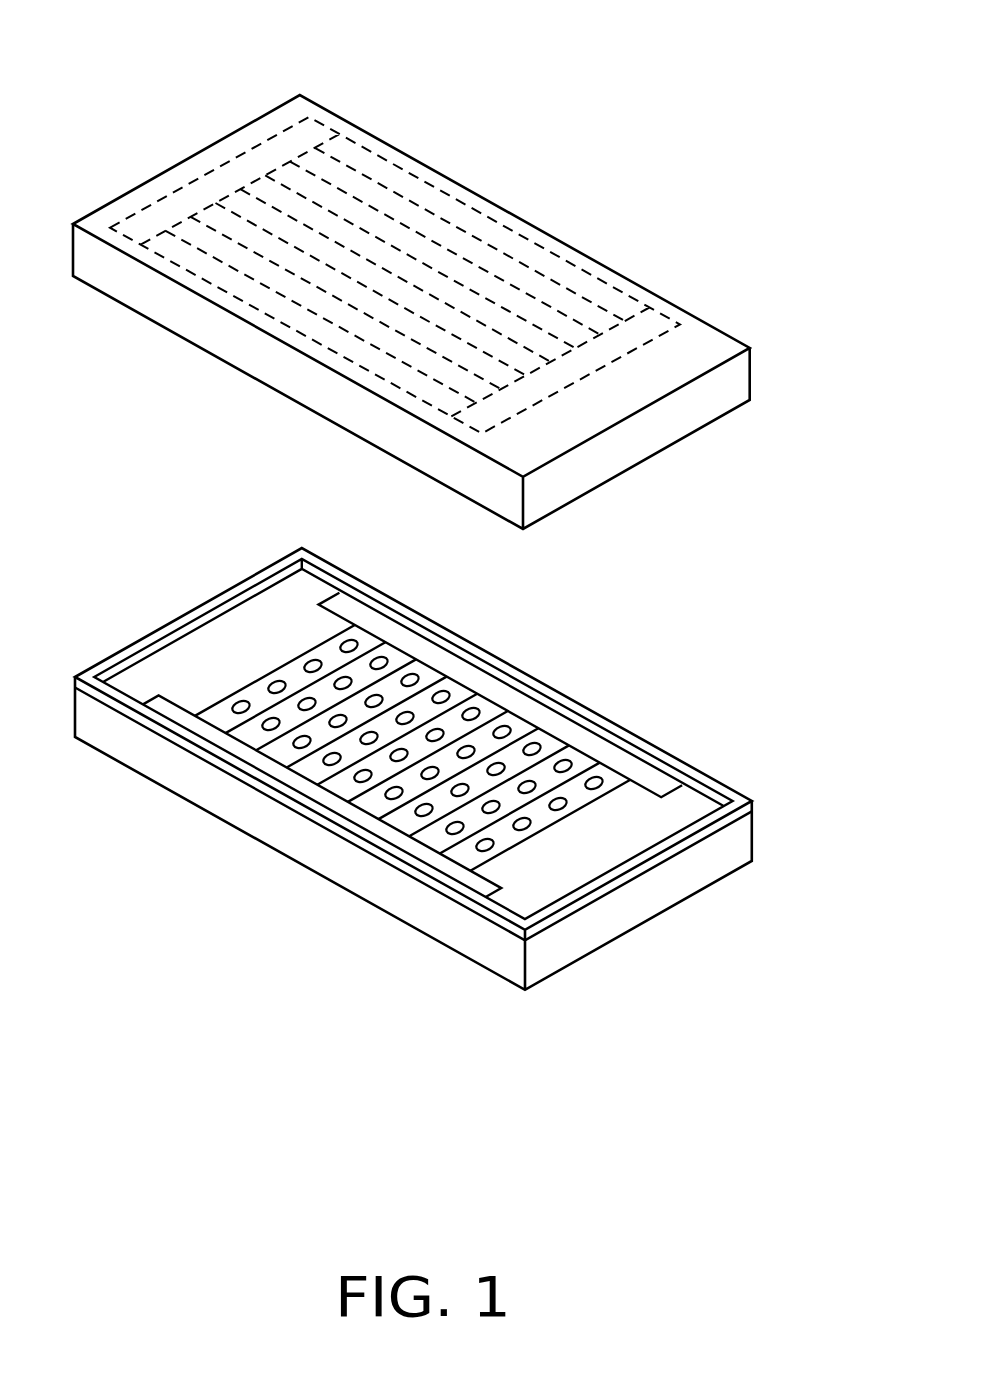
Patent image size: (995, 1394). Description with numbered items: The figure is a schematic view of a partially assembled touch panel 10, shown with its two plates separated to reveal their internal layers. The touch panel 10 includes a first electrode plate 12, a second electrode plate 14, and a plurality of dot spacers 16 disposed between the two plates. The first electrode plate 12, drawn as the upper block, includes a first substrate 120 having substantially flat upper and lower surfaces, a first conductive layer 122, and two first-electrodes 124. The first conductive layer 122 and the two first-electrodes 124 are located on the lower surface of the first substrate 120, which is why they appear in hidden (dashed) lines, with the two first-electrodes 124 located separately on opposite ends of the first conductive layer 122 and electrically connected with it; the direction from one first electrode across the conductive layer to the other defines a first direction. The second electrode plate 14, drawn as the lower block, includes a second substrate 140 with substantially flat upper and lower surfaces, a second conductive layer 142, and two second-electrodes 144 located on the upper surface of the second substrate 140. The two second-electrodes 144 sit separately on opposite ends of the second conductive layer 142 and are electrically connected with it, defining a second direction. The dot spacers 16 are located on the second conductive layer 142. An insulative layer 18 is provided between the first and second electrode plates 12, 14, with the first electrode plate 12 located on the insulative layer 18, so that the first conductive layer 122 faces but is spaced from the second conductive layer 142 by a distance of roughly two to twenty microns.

The touch panel 10 is at (416, 21).
The first electrode plate 12 is at (653, 250).
The first substrate 120 is at (730, 379).
The first conductive layer 122 is at (428, 228).
The first-electrodes 124 is at (223, 177).
The second electrode plate 14 is at (629, 969).
The second substrate 140 is at (372, 886).
The second conductive layer 142 is at (278, 672).
The second-electrodes 144 is at (470, 680).
The dot spacers 16 is at (590, 780).
The insulative layer 18 is at (280, 797).